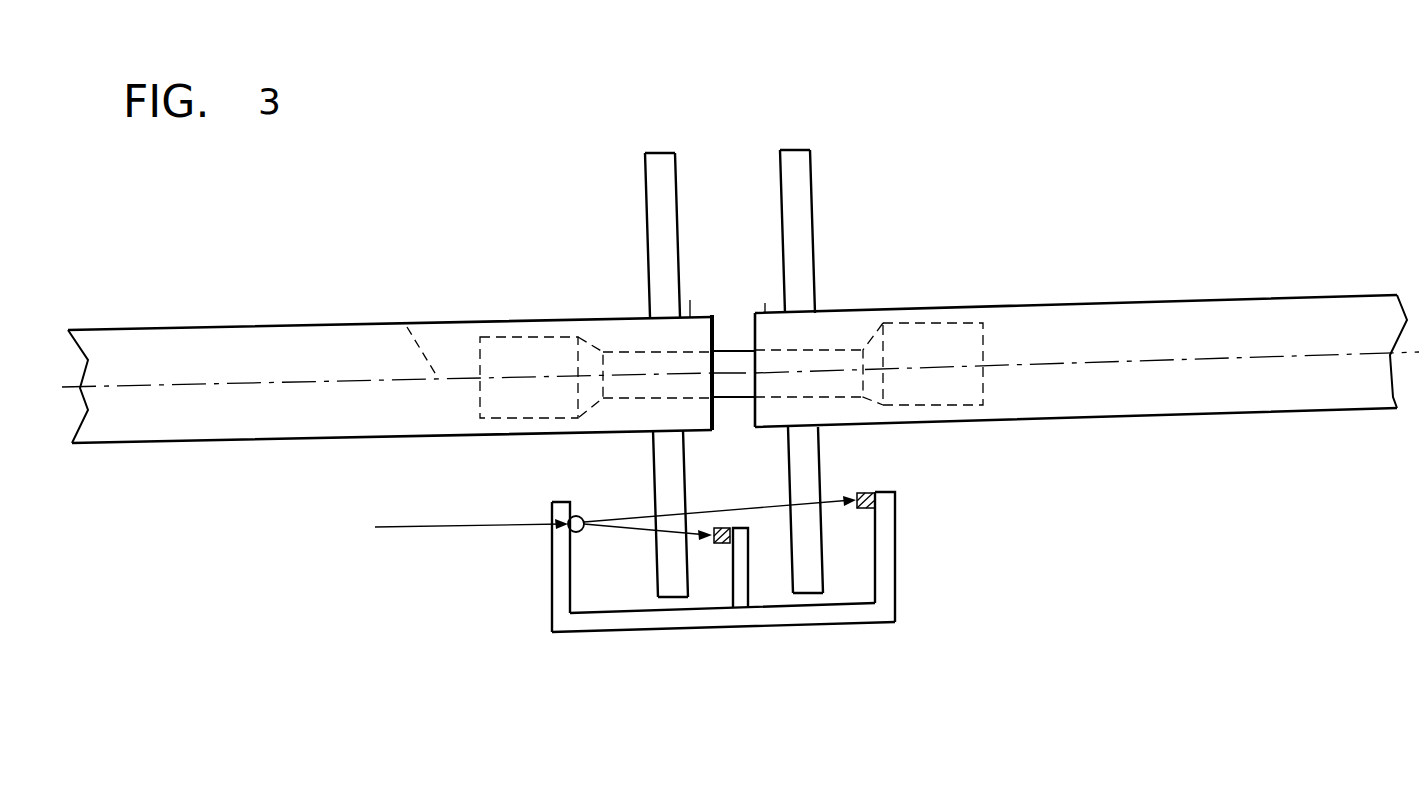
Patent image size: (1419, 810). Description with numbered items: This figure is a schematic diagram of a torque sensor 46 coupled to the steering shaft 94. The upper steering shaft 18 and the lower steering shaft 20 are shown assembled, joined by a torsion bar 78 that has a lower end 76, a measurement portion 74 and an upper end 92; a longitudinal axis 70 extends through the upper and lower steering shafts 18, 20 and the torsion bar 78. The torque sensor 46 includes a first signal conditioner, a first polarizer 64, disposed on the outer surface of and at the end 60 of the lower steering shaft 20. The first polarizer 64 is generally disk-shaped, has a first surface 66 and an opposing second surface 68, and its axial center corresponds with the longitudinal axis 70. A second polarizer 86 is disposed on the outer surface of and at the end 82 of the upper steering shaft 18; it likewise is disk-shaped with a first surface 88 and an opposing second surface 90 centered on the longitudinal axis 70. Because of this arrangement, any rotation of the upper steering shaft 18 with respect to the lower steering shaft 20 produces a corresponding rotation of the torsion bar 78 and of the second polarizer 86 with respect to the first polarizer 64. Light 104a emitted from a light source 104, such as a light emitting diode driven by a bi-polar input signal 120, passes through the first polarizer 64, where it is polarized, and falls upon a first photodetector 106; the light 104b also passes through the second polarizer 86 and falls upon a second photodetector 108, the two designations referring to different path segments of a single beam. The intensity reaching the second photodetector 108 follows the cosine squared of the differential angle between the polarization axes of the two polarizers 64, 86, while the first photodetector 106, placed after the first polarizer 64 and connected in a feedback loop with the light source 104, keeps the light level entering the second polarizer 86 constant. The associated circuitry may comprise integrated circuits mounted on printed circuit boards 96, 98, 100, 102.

The upper steering shaft 18 is at (1082, 304).
The lower steering shaft 20 is at (148, 330).
The torque sensor 46 is at (490, 66).
The end of the lower steering shaft 60 is at (690, 316).
The first polarizer 64 is at (650, 375).
The first surface 66 is at (645, 187).
The second surface 68 is at (675, 188).
The longitudinal axis 70 is at (407, 327).
The measurement portion 74 is at (647, 359).
The lower end 76 is at (539, 357).
The torsion bar 78 is at (733, 402).
The end of the upper steering shaft 82 is at (765, 313).
The second polarizer 86 is at (811, 367).
The first surface 88 is at (813, 177).
The second surface 90 is at (780, 207).
The upper end 92 is at (968, 405).
The steering shaft 94 is at (890, 268).
The printed circuit board 96 is at (730, 598).
The printed circuit board 98 is at (552, 590).
The printed circuit board 100 is at (750, 583).
The printed circuit board 102 is at (895, 555).
The light source 104 is at (580, 517).
The light 104a is at (632, 535).
The light 104b is at (648, 527).
The first photodetector 106 is at (715, 527).
The second photodetector 108 is at (868, 495).
The bi-polar input signal 120 is at (383, 535).